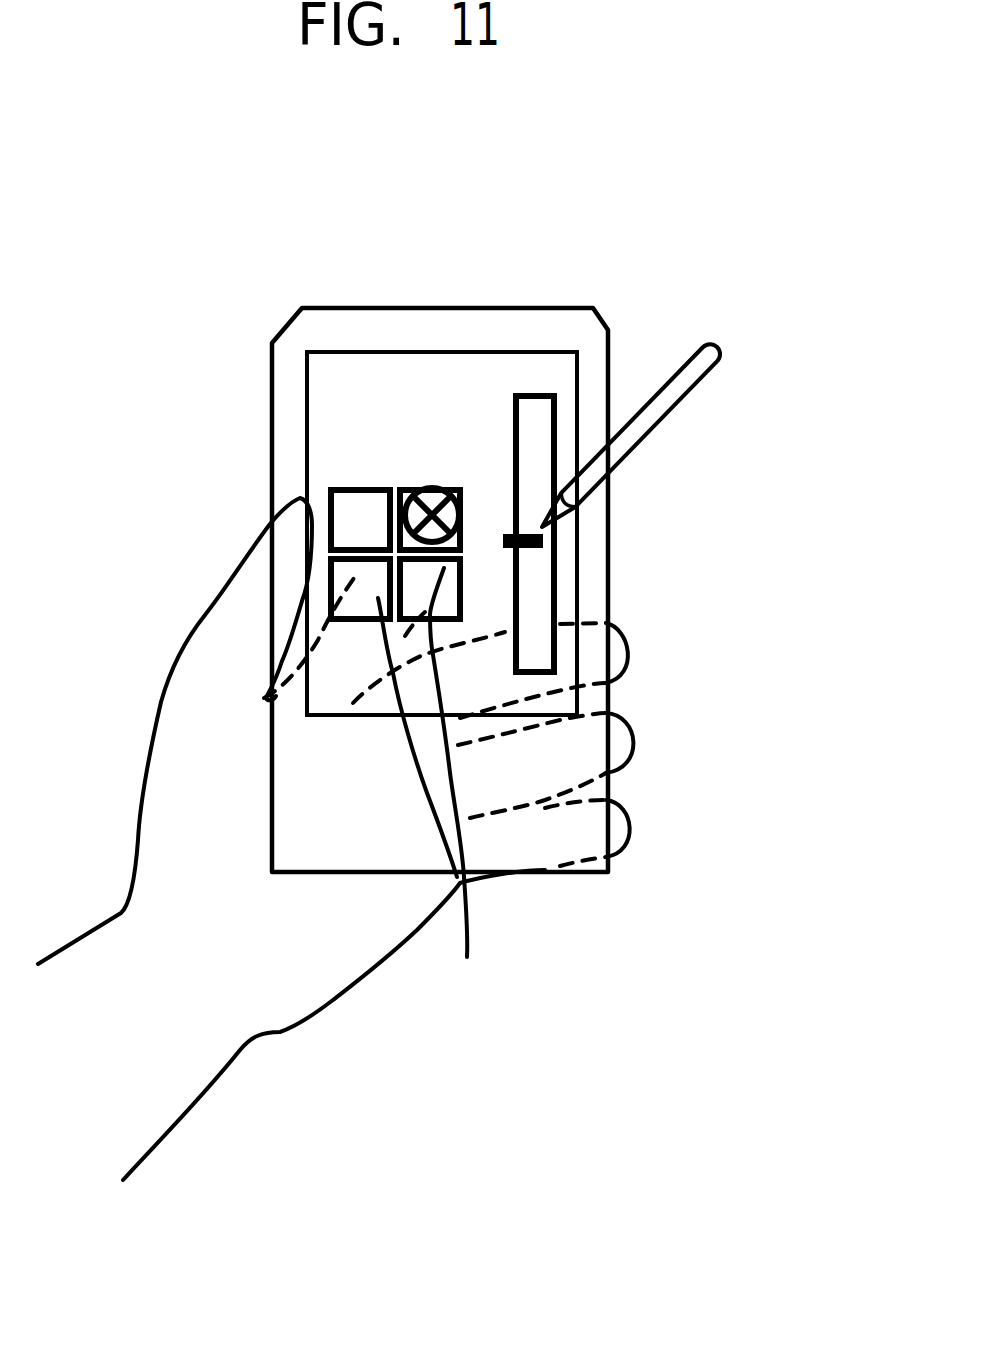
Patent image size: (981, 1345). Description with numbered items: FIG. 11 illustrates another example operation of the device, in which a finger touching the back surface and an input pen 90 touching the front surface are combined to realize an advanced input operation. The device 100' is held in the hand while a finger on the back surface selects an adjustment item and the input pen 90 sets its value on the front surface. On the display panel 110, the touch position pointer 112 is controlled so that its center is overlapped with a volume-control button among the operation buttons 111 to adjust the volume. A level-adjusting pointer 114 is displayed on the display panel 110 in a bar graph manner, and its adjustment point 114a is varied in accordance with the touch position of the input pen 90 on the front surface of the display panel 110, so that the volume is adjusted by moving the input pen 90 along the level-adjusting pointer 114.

The portable terminal 100' is at (513, 590).
The display panel 110 is at (415, 378).
The operation buttons 111 is at (434, 789).
The touch position pointer 112 is at (420, 478).
The level-adjusting pointer 114 is at (553, 440).
The adjustment point 114a is at (545, 548).
The input pen 90 is at (660, 427).